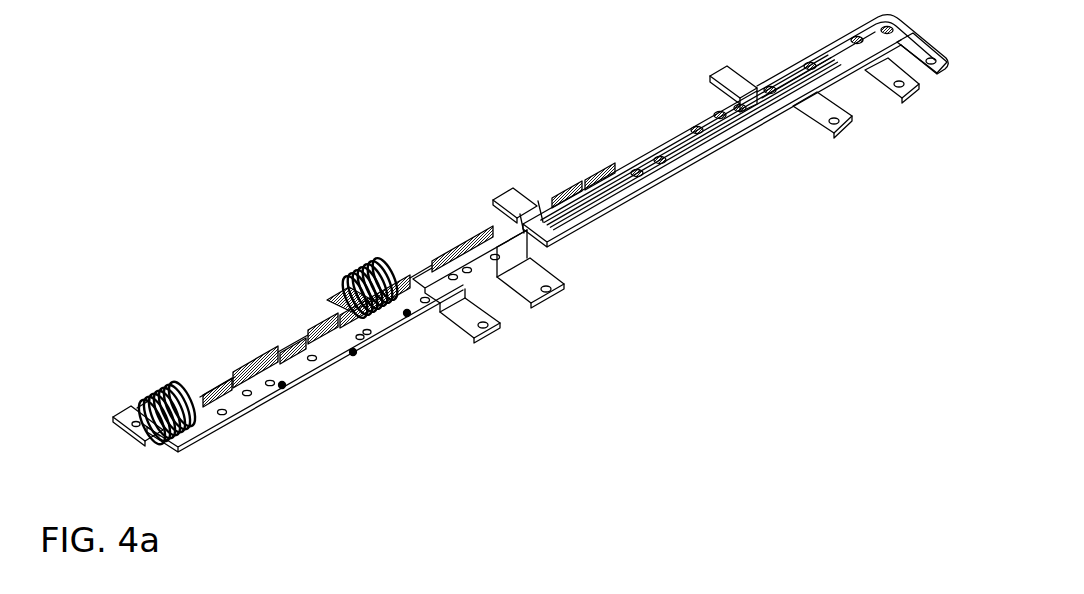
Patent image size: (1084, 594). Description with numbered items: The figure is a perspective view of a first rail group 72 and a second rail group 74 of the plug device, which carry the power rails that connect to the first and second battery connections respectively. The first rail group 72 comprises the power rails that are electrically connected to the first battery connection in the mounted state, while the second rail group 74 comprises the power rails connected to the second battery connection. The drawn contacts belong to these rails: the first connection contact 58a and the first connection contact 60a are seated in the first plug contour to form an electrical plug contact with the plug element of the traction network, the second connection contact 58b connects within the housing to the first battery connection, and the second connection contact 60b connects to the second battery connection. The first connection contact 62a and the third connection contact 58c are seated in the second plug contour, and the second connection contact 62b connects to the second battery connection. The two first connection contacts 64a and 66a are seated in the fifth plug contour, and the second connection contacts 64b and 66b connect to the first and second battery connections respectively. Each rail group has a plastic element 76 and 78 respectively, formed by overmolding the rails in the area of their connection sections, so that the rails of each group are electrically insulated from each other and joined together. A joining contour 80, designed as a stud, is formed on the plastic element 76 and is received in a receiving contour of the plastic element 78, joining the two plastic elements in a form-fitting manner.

The first rail group 72 is at (243, 252).
The second rail group 74 is at (598, 104).
The first connection contact of the first power rail 58a is at (333, 293).
The second connection contact of the first power rail 58b is at (545, 300).
The third connection contact of the first power rail 58c is at (257, 340).
The first connection contact of the second power rail 60a is at (722, 73).
The second connection contact of the second power rail 60b is at (832, 133).
The first connection contact of the third power rail 62a is at (578, 170).
The second connection contact of the third power rail 62b is at (945, 66).
The first connection contact of the fourth power rail 64a is at (137, 428).
The second connection contact of the fourth power rail 64b is at (480, 338).
The first connection contact of the fifth power rail 66a is at (503, 190).
The second connection contact of the fifth power rail 66b is at (898, 96).
The plastic element 76 is at (433, 265).
The plastic element 78 is at (672, 182).
The joining contour 80 is at (282, 388).